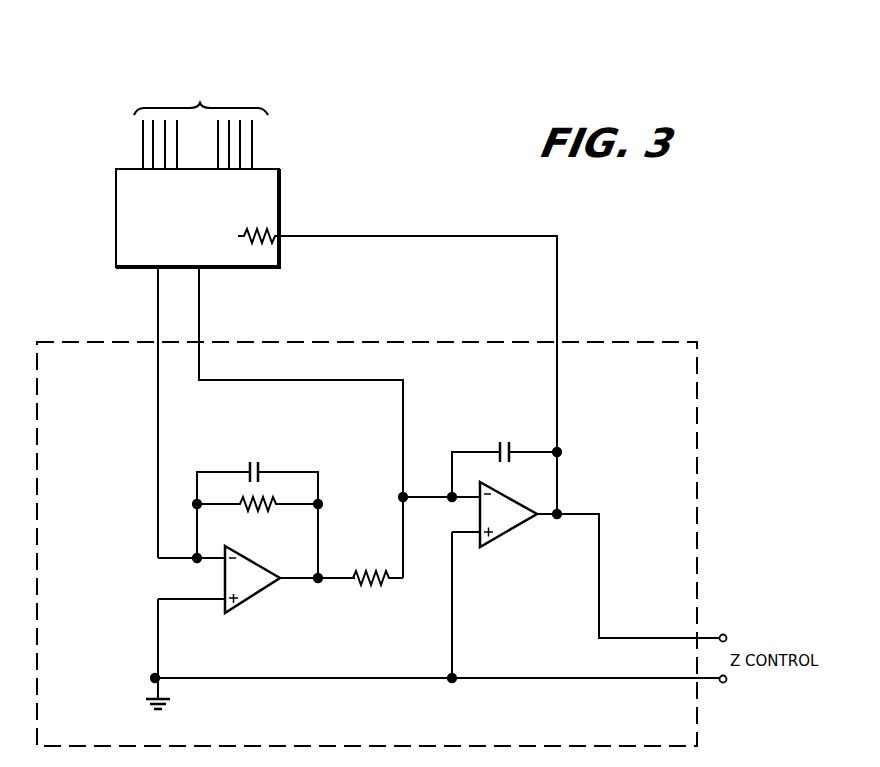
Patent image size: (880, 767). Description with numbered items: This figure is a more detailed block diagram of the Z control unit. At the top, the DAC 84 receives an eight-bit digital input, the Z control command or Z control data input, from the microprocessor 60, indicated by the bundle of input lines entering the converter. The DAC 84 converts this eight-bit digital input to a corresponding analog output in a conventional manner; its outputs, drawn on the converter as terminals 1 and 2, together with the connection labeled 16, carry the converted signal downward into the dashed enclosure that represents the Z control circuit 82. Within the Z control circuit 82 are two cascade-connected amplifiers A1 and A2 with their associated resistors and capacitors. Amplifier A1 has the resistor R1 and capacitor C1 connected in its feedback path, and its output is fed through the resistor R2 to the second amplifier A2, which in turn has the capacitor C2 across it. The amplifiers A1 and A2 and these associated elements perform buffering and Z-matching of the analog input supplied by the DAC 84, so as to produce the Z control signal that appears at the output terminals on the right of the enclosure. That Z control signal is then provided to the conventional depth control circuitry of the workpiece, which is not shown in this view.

The microprocessor 60 is at (199, 98).
The DAC 84 is at (264, 186).
The resistor output line 16 is at (397, 366).
The Z control circuit 82 is at (640, 343).
The DAC output I1 1 is at (301, 422).
The DAC output I2 2 is at (152, 412).
The amplifier A1 is at (256, 579).
The amplifier A2 is at (561, 580).
The capacitor C1 is at (257, 510).
The capacitor C2 is at (507, 460).
The resistor R1 is at (258, 515).
The resistor R2 is at (376, 590).